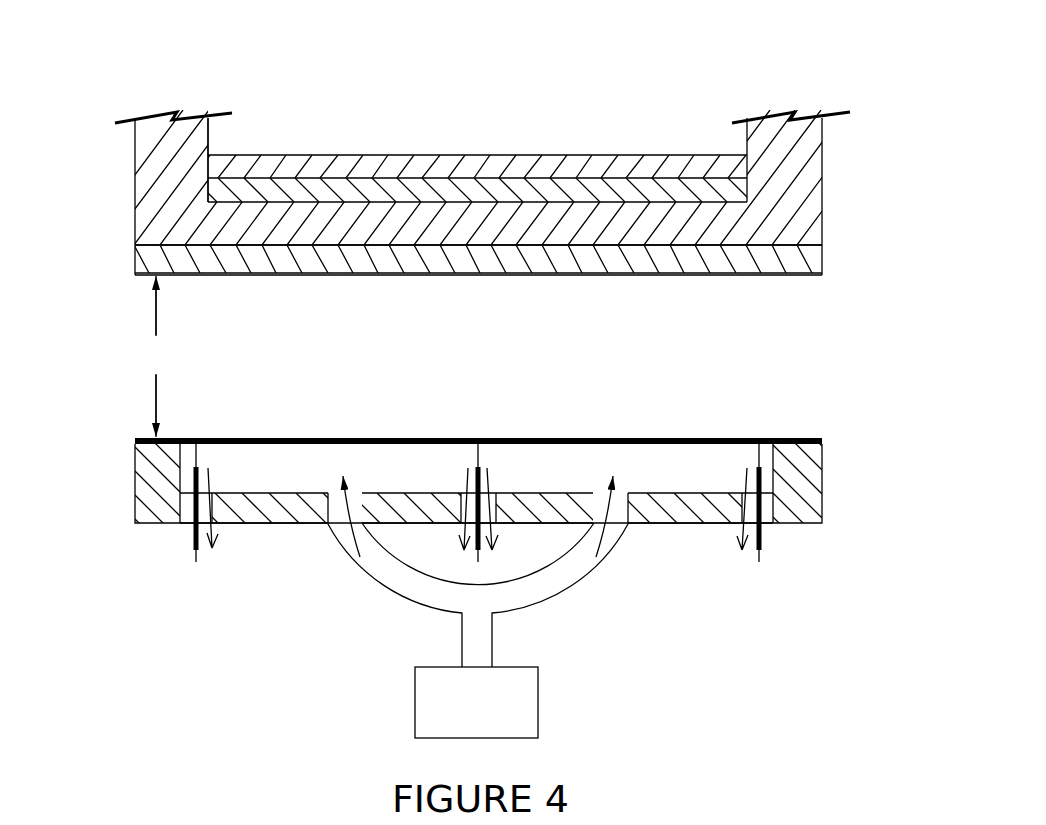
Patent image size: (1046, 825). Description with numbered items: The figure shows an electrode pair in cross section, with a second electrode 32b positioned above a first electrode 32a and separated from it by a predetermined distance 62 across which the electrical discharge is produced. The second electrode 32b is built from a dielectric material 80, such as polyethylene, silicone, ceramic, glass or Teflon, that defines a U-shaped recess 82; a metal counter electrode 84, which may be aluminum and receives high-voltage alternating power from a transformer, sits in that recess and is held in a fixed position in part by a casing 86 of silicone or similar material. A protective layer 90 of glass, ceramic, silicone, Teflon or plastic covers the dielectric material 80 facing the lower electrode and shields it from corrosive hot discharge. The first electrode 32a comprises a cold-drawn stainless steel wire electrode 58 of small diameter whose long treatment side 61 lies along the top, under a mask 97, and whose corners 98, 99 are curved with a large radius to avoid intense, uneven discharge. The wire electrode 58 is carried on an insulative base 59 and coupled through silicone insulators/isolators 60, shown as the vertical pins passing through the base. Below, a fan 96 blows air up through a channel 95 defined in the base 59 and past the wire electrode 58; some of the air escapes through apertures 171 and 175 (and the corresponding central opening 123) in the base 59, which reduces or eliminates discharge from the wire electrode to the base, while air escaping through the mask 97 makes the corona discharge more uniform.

The second electrode 32b is at (758, 70).
The first electrode 32a is at (767, 390).
The dielectric material 80 is at (160, 140).
The U-shaped recess 82 is at (212, 150).
The metal counter electrode 84 is at (289, 184).
The casing 86 is at (370, 162).
The protective layer 90 is at (140, 264).
The predetermined distance 62 is at (153, 356).
The treatment side 61 is at (415, 433).
The mask 97 is at (530, 433).
The insulative base 59 is at (140, 473).
The insulators/isolators 60 is at (182, 533).
The wire electrode 58 is at (210, 558).
The aperture 171 is at (214, 503).
The center pin aperture 123 is at (462, 508).
The aperture 175 is at (742, 507).
The corner 98 is at (210, 462).
The corner 99 is at (745, 456).
The channel 95 is at (282, 468).
The fan 96 is at (547, 704).